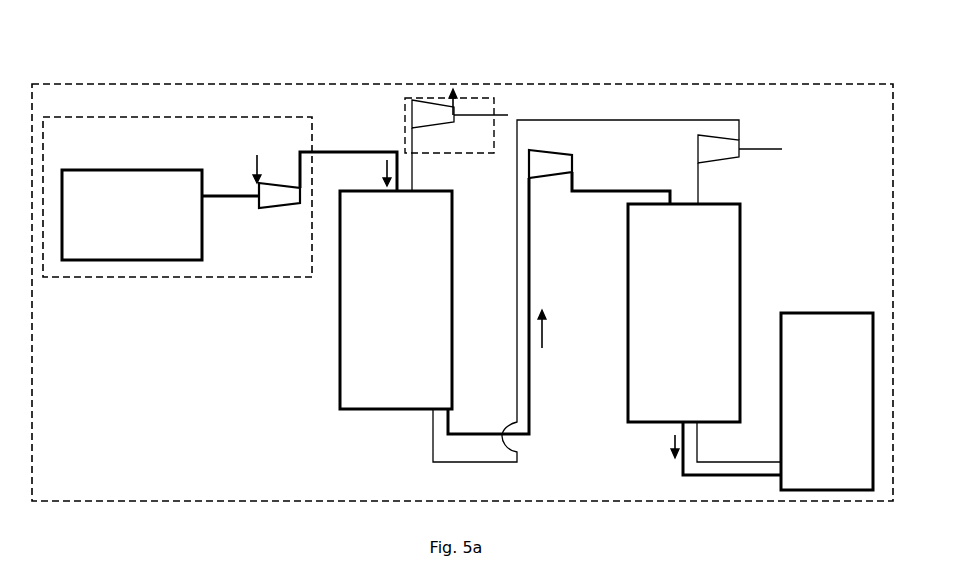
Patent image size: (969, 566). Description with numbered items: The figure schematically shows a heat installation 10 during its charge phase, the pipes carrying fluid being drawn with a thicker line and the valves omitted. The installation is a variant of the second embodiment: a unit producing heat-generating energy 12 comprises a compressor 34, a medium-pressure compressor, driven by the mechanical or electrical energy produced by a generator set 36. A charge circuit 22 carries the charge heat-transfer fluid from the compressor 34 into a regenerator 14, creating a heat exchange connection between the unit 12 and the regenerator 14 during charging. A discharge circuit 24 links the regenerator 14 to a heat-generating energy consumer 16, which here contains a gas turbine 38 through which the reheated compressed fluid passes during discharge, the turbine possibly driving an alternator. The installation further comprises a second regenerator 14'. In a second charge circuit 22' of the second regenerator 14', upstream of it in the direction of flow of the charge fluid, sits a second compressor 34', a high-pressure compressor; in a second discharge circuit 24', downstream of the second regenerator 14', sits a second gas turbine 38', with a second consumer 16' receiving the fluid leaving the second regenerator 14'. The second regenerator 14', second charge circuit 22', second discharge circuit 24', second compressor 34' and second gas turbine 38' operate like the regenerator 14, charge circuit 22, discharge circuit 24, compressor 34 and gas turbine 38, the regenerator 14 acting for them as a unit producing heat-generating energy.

The heat installation 10 is at (777, 85).
The unit producing heat-generating energy 12 is at (85, 116).
The regenerator 14 is at (396, 300).
The second regenerator 14' is at (684, 313).
The heat-generating energy consumer 16 is at (456, 98).
The second heat-generating energy consumer 16' is at (827, 401).
The charge circuit 22 is at (348, 156).
The second charge circuit 22' is at (497, 306).
The discharge circuit 24 is at (439, 159).
The second discharge circuit 24' is at (726, 183).
The compressor 34 is at (271, 131).
The second compressor 34' is at (595, 110).
The generator set 36 is at (132, 215).
The gas turbine 38 is at (460, 93).
The second gas turbine 38' is at (740, 127).